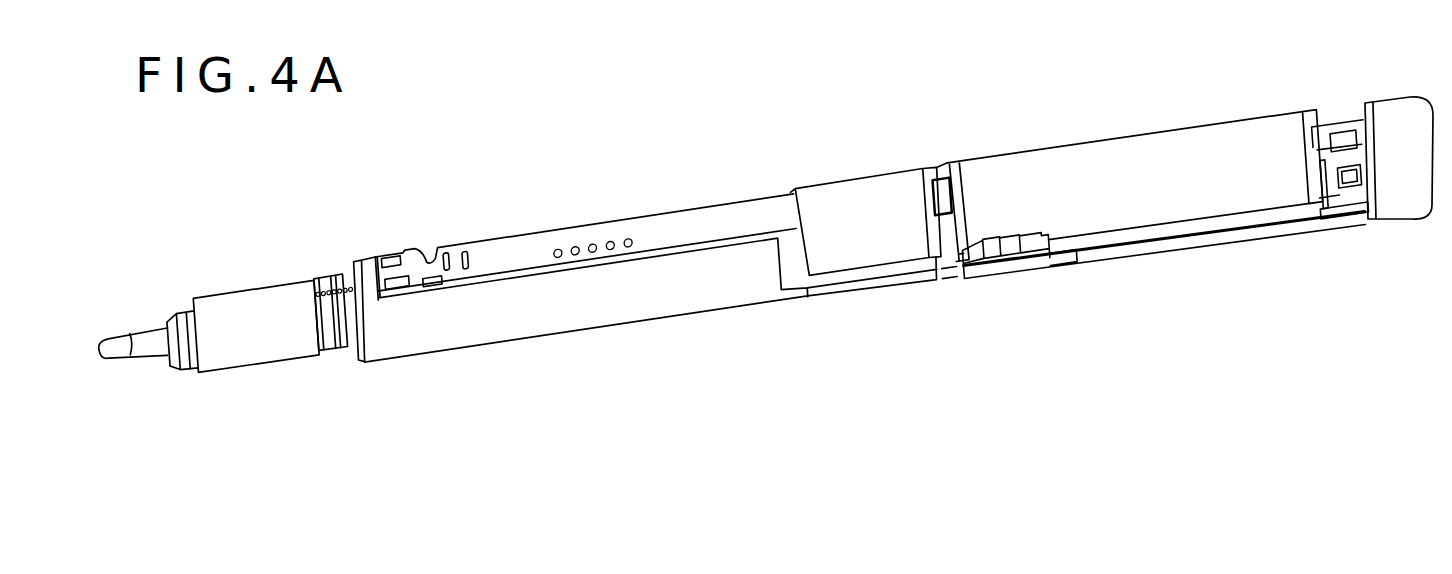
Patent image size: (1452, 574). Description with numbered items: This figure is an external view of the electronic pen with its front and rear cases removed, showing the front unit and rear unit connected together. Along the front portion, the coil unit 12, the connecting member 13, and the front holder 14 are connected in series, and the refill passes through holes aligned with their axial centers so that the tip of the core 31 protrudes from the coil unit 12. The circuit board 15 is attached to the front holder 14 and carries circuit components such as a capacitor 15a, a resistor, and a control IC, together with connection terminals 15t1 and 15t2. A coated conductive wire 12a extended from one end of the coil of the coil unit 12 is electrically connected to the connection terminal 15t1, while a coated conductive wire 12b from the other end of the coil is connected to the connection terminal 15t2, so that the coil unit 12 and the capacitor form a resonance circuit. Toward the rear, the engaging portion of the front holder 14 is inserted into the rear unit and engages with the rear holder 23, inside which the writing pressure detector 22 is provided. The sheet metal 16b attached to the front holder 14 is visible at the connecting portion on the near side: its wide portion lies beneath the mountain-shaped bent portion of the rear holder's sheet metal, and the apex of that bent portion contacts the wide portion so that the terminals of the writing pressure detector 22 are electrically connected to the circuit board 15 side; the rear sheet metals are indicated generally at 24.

The coil unit 12 is at (246, 290).
The coated conductive wire 12a is at (338, 352).
The coated conductive wire 12b is at (396, 364).
The connecting member 13 is at (333, 276).
The front holder 14 is at (535, 334).
The circuit board 15 is at (651, 216).
The capacitor 15a is at (459, 250).
The connection terminal 15t1 is at (392, 255).
The connection terminal 15t2 is at (398, 288).
The sheet metal 16b is at (950, 262).
The writing pressure detector 22 is at (1336, 118).
The rear holder 23 is at (1150, 150).
The rail member 24 is at (1180, 230).
The core 31 is at (146, 358).